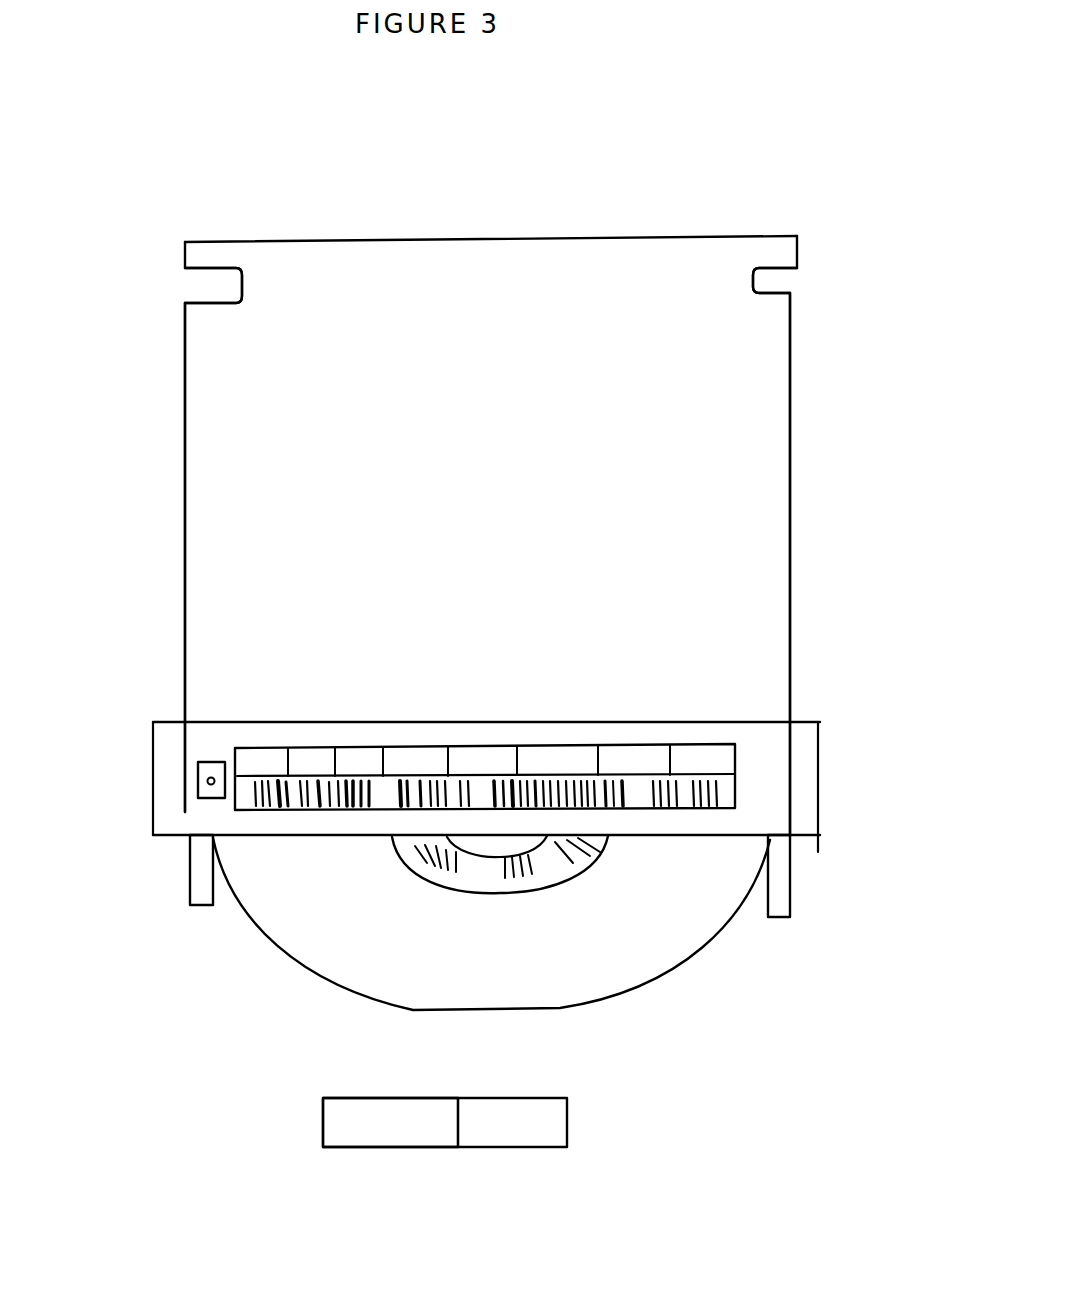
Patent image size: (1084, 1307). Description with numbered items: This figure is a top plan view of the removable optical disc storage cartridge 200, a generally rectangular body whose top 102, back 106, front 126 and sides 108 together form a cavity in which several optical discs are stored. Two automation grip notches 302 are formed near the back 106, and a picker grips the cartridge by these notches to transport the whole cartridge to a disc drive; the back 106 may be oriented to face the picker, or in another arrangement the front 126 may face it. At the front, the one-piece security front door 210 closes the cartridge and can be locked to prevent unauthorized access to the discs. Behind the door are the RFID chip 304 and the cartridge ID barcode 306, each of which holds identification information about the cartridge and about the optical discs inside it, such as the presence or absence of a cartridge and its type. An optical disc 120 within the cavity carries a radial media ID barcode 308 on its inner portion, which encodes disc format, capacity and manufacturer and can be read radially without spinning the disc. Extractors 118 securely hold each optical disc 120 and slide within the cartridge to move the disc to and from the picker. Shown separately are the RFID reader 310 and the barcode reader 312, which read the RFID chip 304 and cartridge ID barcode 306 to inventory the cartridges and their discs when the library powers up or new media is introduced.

The removable optical disc storage cartridge 200 is at (497, 148).
The top 102 is at (510, 432).
The back 106 is at (343, 240).
The sides 108 is at (183, 378).
The automation grip notches 302 is at (205, 287).
The one-piece security front door 210 is at (165, 757).
The RFID chip 304 is at (211, 762).
The cartridge ID barcode 306 is at (507, 740).
The radial media ID barcode 308 is at (585, 858).
The extractors 118 is at (190, 880).
The optical disc 120 is at (525, 958).
The front 126 is at (238, 950).
The RFID reader 310 is at (567, 1118).
The barcode reader 312 is at (323, 1120).